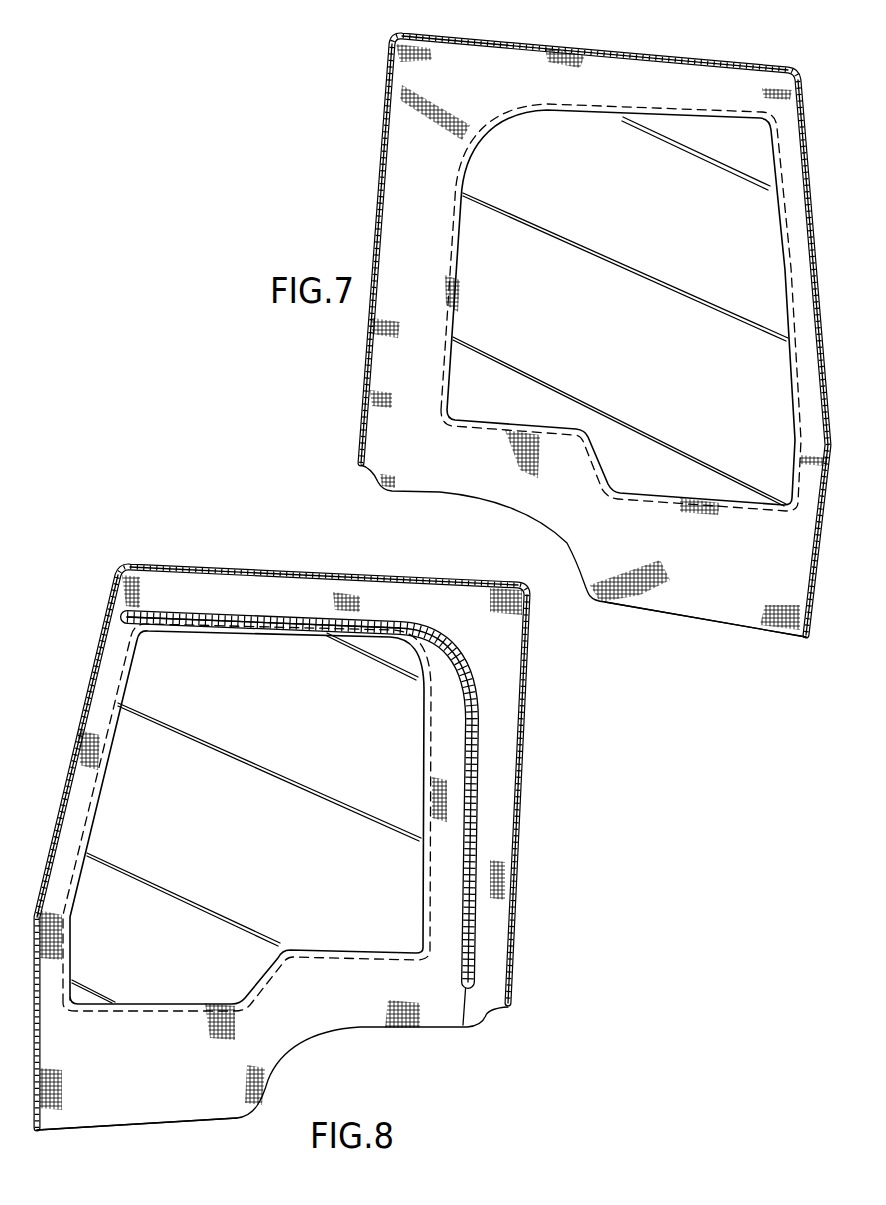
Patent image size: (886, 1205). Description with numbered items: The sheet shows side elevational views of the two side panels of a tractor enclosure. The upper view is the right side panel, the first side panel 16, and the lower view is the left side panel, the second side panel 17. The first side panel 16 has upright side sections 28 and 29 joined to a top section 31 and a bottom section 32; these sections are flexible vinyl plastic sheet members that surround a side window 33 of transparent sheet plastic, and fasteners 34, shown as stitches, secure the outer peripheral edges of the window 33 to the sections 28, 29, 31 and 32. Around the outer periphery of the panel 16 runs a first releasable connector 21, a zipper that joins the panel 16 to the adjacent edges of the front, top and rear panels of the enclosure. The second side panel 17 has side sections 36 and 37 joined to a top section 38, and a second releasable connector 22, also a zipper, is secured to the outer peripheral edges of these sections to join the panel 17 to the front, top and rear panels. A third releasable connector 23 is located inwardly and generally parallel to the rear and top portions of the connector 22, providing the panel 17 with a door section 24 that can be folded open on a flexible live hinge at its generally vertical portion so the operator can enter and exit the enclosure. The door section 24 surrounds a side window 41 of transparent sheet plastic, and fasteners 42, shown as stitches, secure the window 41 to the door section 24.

In FIG. 7, the first side panel 16 is at (676, 46).
In FIG. 8, the second side panel 17 is at (120, 545).
In FIG. 7, the first releasable connector 21 is at (362, 398).
In FIG. 8, the second releasable connector 22 is at (200, 574).
In FIG. 8, the third releasable connector 23 is at (478, 835).
In FIG. 8, the door section 24 is at (200, 1113).
In FIG. 7, the upright side section 28 is at (806, 320).
In FIG. 7, the upright side section 29 is at (396, 208).
In FIG. 7, the top section 31 is at (601, 75).
In FIG. 7, the bottom section 32 is at (725, 608).
In FIG. 7, the side window 33 is at (750, 202).
In FIG. 7, the fasteners 34 is at (785, 230).
In FIG. 8, the side section 36 is at (78, 790).
In FIG. 8, the side section 37 is at (500, 773).
In FIG. 8, the top section 38 is at (322, 594).
In FIG. 8, the side window 41 is at (135, 693).
In FIG. 8, the fasteners 42 is at (438, 730).